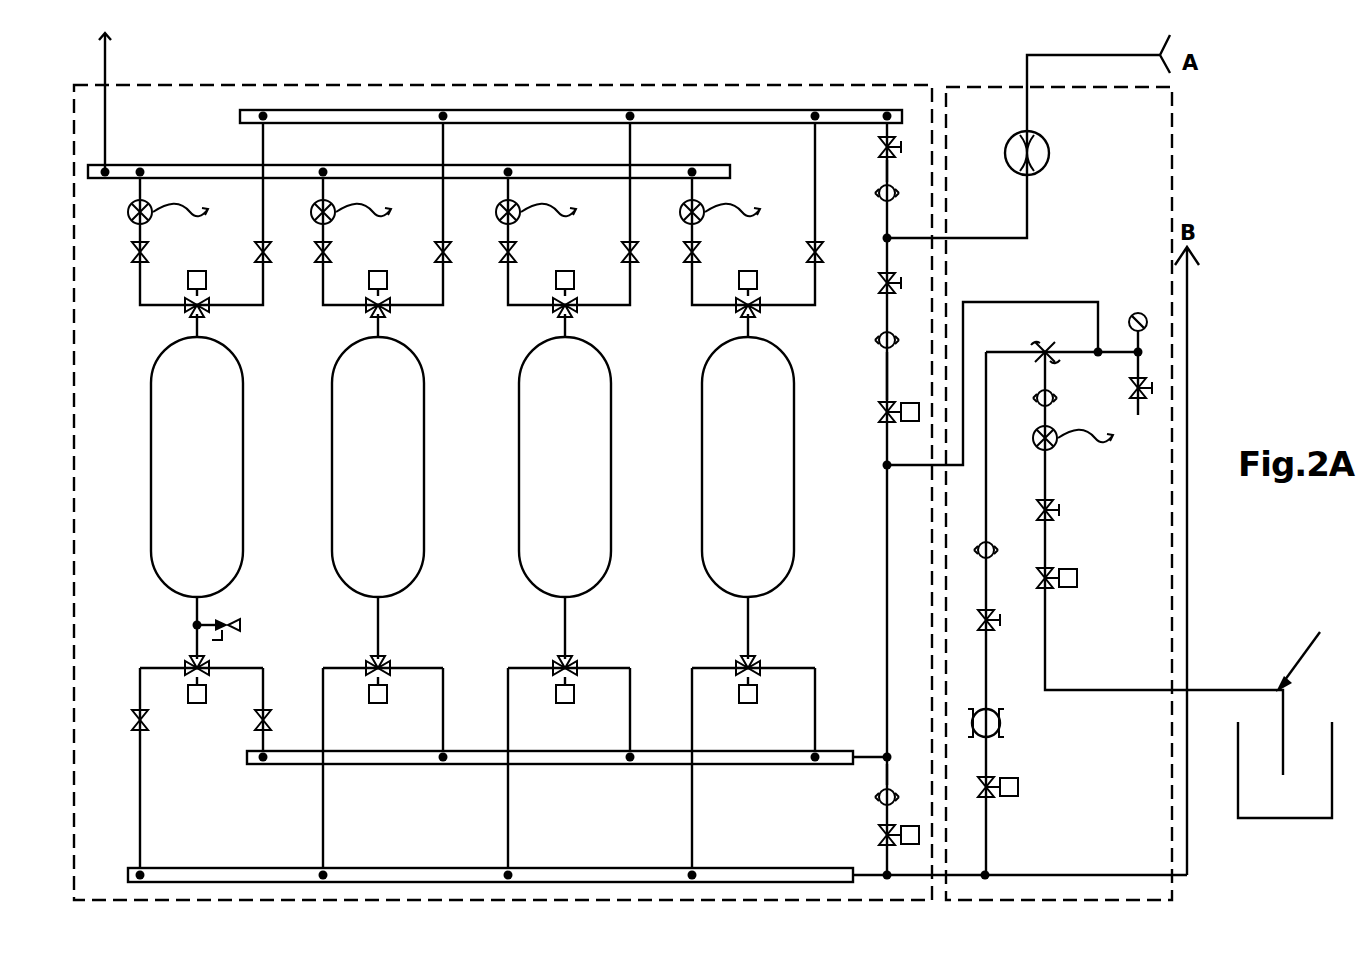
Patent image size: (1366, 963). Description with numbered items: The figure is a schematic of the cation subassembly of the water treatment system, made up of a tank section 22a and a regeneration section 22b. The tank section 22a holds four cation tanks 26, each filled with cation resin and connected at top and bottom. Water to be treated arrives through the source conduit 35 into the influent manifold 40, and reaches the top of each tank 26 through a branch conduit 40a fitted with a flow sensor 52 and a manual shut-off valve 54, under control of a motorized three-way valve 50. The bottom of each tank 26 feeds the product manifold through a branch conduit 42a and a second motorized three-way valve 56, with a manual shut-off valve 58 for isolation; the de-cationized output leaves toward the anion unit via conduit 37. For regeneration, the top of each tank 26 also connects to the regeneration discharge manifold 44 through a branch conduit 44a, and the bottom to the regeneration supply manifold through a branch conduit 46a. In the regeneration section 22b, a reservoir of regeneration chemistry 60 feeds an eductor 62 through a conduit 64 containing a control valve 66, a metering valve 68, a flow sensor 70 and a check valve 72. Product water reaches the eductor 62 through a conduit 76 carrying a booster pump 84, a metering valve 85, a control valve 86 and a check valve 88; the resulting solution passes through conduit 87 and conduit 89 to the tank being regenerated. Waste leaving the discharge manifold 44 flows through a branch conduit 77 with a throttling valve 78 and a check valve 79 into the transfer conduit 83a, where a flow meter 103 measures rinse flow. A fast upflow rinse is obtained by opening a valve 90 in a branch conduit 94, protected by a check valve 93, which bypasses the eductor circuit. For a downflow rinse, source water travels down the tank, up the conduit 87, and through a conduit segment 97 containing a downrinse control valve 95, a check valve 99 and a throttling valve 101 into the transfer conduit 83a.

The tank section 22a is at (505, 83).
The regeneration section 22b is at (1172, 160).
The cation tank 26 is at (207, 489).
The source conduit 35 is at (107, 64).
The conduit 37 is at (1188, 370).
The influent manifold 40 is at (167, 165).
The branch conduit 40a is at (138, 285).
The branch conduit 42a is at (140, 828).
The regeneration discharge manifold 44 is at (322, 110).
The branch conduit 44a is at (219, 310).
The branch conduit 46a is at (218, 664).
The motorized three-way valve 50 is at (195, 270).
The flow sensor 52 is at (128, 206).
The manual shut-off valve 54 is at (132, 252).
The motorized three-way valve 56 is at (193, 703).
The manual shut-off valve 58 is at (132, 720).
The reservoir of regeneration chemistry 60 is at (1300, 813).
The eductor 62 is at (1040, 350).
The conduit 64 is at (1047, 670).
The control valve 66 is at (1078, 578).
The metering valve 68 is at (1050, 505).
The flow sensor 70 is at (1058, 430).
The check valve 72 is at (1053, 396).
The conduit 76 is at (986, 452).
The branch conduit 77 is at (884, 175).
The throttling valve 78 is at (879, 147).
The check valve 79 is at (878, 195).
The transfer conduit 83a is at (1030, 205).
The booster pump 84 is at (1003, 724).
The metering valve 85 is at (990, 624).
The control valve 86 is at (1020, 790).
The conduit 87 is at (880, 565).
The check valve 88 is at (992, 548).
The conduit 89 is at (1037, 300).
The valve 90 is at (920, 835).
The check valve 93 is at (878, 795).
The branch conduit 94 is at (890, 780).
The downrinse control valve 95 is at (878, 416).
The conduit segment 97 is at (885, 378).
The check valve 99 is at (878, 341).
The throttling valve 101 is at (878, 285).
The flow meter 103 is at (1036, 136).